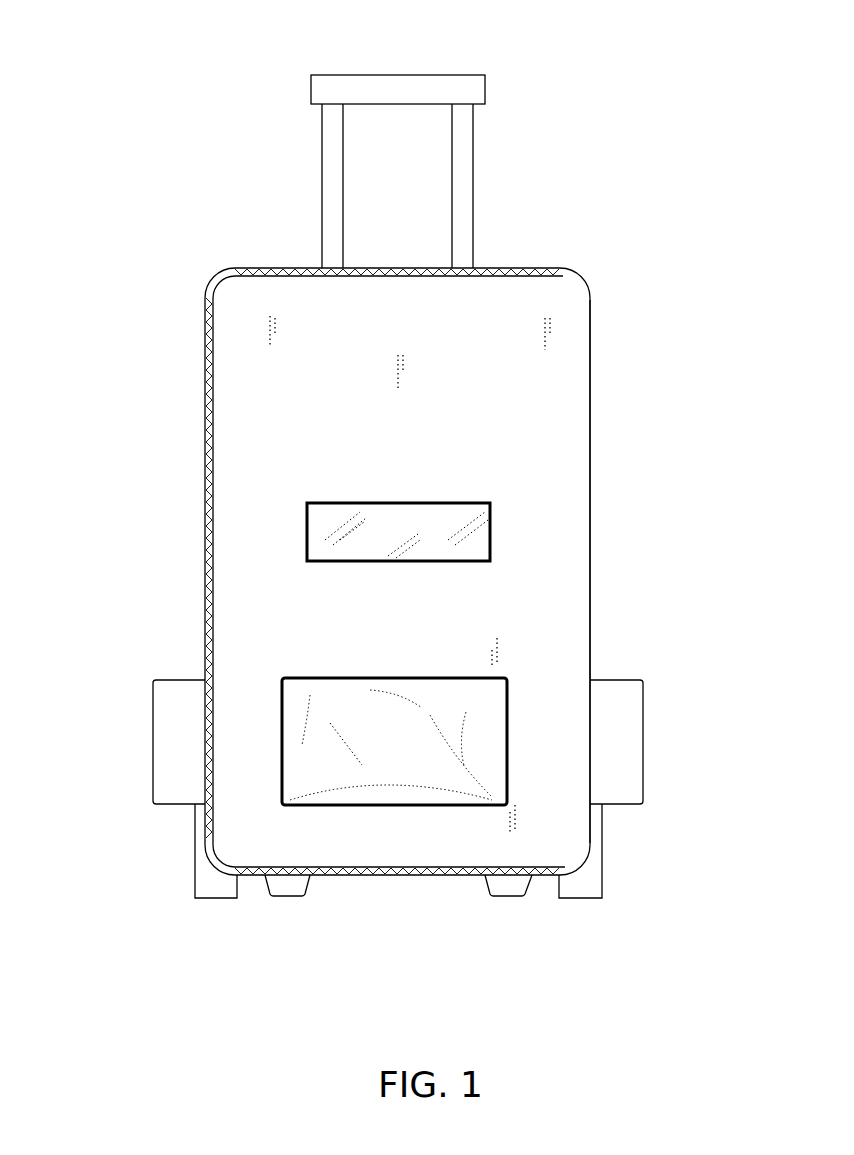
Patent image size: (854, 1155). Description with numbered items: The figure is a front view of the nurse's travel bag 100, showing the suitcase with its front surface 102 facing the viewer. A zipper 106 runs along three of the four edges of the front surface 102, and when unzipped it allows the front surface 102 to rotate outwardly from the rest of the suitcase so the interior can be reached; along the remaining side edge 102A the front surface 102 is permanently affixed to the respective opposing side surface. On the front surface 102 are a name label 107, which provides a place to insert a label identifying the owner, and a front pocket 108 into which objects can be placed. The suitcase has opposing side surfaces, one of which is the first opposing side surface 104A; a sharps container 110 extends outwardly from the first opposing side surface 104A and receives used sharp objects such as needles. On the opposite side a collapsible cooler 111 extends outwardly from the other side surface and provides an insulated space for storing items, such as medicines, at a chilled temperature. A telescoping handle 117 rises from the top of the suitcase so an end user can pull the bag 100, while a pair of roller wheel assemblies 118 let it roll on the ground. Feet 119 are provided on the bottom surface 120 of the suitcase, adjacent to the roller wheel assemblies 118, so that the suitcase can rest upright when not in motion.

The nurse's travel bag 100 is at (140, 146).
The front surface 102 is at (256, 328).
The side edge 102A is at (590, 354).
The first opposing side surface 104A is at (205, 470).
The zipper 106 is at (257, 268).
The name label 107 is at (490, 530).
The front pocket 108 is at (485, 697).
The sharps container 110 is at (180, 716).
The collapsible cooler 111 is at (620, 733).
The telescoping handle 117 is at (400, 77).
The roller wheel assemblies 118 is at (597, 877).
The feet 119 is at (500, 898).
The bottom surface 120 is at (393, 875).